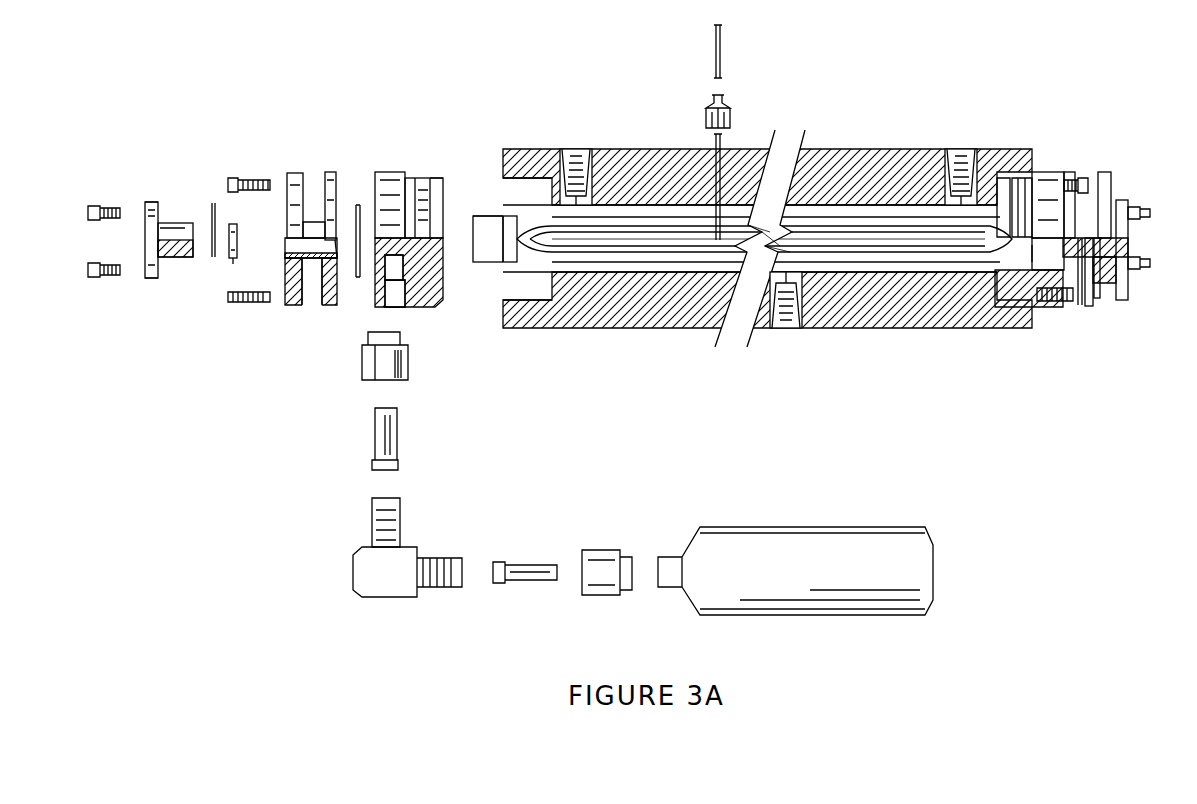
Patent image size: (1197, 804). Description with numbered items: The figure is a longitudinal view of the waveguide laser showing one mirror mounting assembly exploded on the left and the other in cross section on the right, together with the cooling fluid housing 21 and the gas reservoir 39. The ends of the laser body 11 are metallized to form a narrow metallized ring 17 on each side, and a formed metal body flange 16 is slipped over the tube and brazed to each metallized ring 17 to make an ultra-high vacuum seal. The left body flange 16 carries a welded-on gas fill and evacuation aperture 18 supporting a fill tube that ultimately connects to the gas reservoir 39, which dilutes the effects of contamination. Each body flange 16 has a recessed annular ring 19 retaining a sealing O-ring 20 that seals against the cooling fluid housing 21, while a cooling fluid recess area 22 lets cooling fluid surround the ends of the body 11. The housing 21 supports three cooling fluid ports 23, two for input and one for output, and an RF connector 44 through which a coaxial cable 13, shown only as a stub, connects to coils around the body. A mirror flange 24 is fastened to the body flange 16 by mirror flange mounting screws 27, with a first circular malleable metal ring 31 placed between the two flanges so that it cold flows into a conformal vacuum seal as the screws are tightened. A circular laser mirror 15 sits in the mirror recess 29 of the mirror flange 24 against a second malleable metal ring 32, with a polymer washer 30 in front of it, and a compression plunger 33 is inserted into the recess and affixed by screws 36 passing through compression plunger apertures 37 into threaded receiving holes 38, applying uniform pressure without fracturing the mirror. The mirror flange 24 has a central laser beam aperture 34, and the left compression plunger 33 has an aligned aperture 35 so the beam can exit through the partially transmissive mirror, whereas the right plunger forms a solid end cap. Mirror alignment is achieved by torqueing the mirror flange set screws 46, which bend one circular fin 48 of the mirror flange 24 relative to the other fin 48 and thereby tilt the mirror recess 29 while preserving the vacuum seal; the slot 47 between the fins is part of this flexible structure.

The laser body 11 is at (478, 214).
The coaxial cable 13 is at (548, 258).
The laser mirror 15 is at (235, 258).
The body flange 16 is at (385, 172).
The metallized ring 17 is at (500, 256).
The gas fill and evacuation aperture 18 is at (385, 300).
The recessed annular ring 19 is at (425, 222).
The sealing O-ring 20 is at (425, 180).
The cooling fluid housing 21 is at (862, 149).
The cooling fluid recess area 22 is at (470, 226).
The cooling fluid port 23 is at (578, 152).
The mirror flange 24 is at (327, 172).
The mirror flange mounting screw 27 is at (234, 178).
The mirror recess 29 is at (292, 246).
The polymer washer 30 is at (213, 240).
The first circular malleable metal ring 31 is at (358, 212).
The second malleable metal ring 32 is at (1084, 357).
The compression plunger 33 is at (152, 202).
The laser beam aperture 34 is at (337, 262).
The aperture 35 is at (146, 242).
The screw 36 is at (88, 213).
The compression plunger aperture 37 is at (158, 278).
The threaded receiving hole 38 is at (286, 268).
The gas reservoir 39 is at (748, 615).
The RF connector 44 is at (722, 74).
The mirror flange set screw 46 is at (247, 303).
The slot 47 is at (300, 306).
The circular fin 48 is at (295, 173).